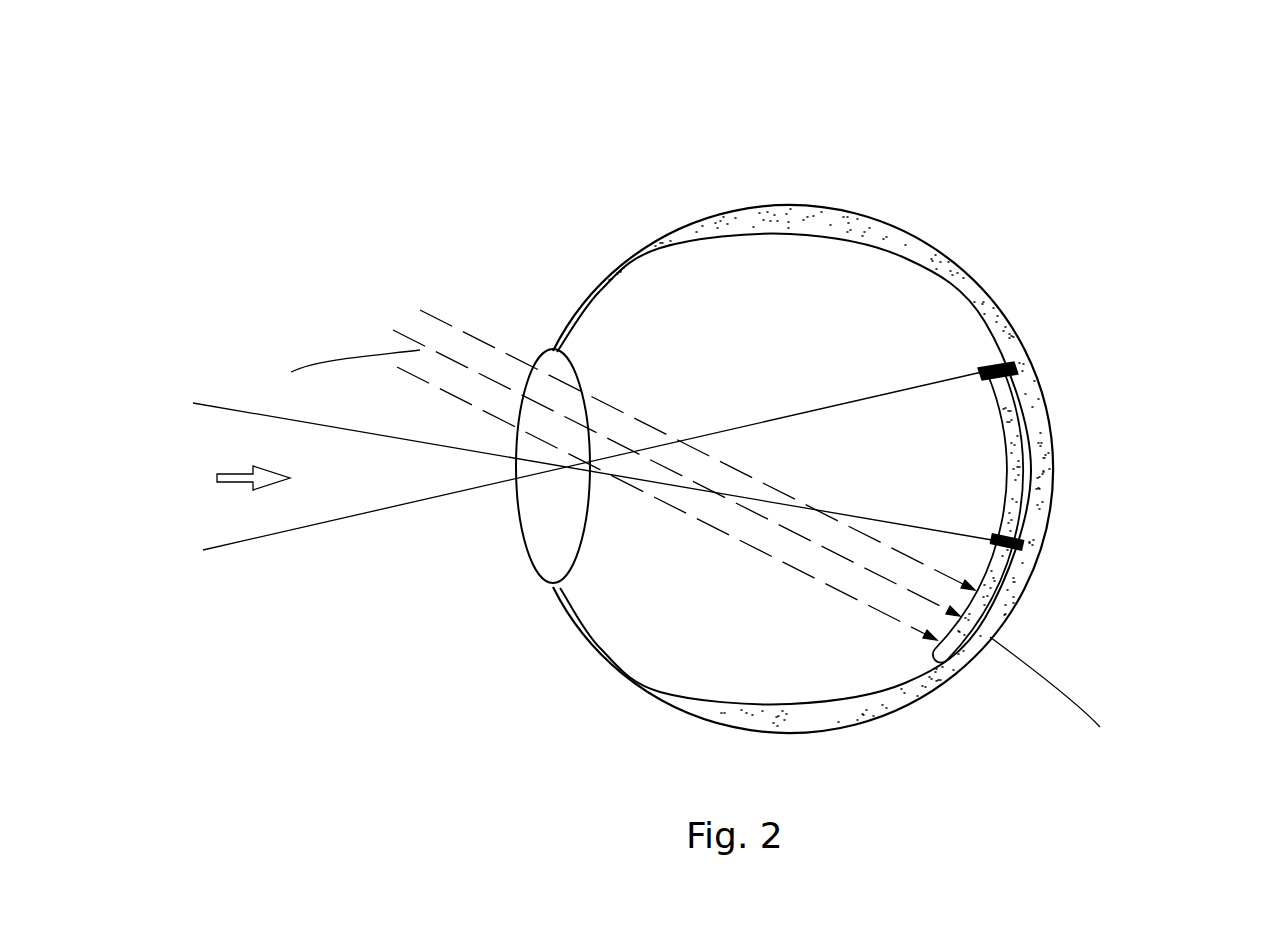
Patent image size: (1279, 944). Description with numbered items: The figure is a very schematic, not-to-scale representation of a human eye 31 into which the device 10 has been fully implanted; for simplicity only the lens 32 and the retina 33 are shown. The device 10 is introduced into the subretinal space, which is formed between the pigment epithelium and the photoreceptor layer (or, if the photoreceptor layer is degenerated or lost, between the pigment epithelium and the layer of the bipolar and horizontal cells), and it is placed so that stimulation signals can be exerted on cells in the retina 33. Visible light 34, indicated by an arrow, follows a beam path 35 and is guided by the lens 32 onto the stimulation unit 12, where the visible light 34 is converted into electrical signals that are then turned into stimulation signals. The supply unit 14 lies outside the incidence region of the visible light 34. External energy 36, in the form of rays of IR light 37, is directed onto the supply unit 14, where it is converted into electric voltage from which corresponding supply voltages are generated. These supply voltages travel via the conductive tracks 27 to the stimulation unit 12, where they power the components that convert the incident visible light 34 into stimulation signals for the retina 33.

The device 10 is at (1062, 506).
The stimulation unit 12 is at (1025, 403).
The supply unit 14 is at (1062, 694).
The conductive tracks 27 is at (1013, 567).
The human eye 31 is at (643, 235).
The lens 32 is at (546, 542).
The retina 33 is at (967, 303).
The visible light 34 is at (237, 487).
The beam path 35 is at (346, 520).
The external energy 36 is at (472, 312).
The rays of IR light 37 is at (338, 368).